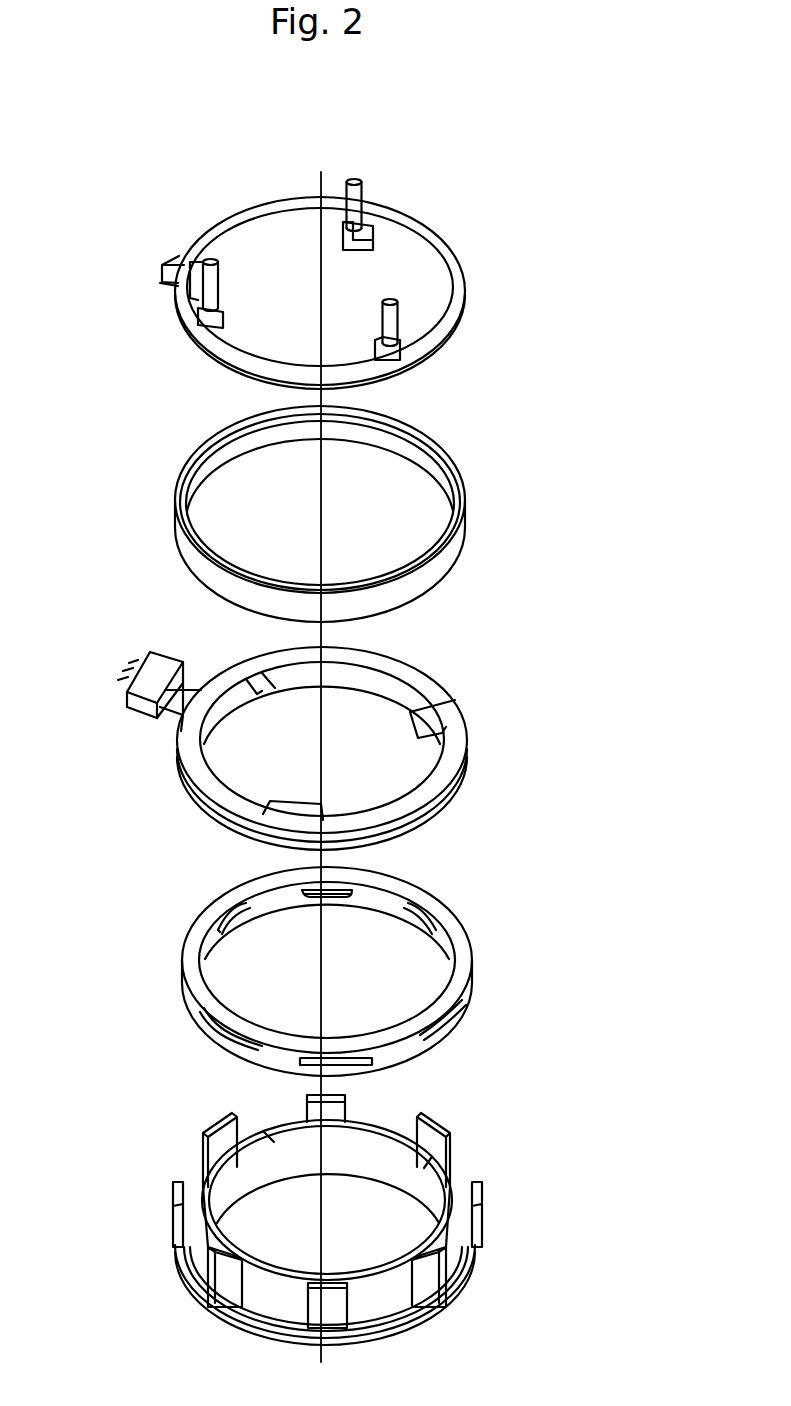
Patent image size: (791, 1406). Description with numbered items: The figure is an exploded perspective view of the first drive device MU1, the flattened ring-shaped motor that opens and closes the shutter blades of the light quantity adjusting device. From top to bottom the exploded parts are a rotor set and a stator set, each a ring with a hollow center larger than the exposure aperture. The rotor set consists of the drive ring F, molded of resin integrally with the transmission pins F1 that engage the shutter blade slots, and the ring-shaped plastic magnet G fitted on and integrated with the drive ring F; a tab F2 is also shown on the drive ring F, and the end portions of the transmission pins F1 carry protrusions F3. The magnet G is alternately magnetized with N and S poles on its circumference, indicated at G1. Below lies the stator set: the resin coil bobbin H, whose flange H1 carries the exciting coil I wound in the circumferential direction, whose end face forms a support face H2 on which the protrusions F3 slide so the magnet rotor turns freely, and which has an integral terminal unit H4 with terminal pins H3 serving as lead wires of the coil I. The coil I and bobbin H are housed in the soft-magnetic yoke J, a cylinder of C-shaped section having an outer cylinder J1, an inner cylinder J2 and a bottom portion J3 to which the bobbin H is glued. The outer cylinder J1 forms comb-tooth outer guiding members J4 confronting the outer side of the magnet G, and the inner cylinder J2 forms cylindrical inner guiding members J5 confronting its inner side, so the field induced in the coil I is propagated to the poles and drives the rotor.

The first drive device MU1 is at (522, 262).
The drive ring F is at (200, 244).
The transmission pins F1 is at (355, 201).
The tab F2 is at (162, 266).
The protrusions F3 is at (355, 244).
The magnet G is at (178, 484).
The magnetic poles G1 is at (404, 590).
The coil bobbin H is at (225, 690).
The flange H1 is at (423, 816).
The support face H2 is at (427, 718).
The terminal pins H3 is at (126, 688).
The terminal unit H4 is at (150, 708).
The coil I is at (200, 933).
The yoke J is at (185, 1150).
The outer cylinder J1 is at (483, 1217).
The inner cylinder J2 is at (412, 1181).
The bottom portion J3 is at (457, 1253).
The outer guiding members J4 is at (446, 1118).
The inner guiding members J5 is at (400, 1147).